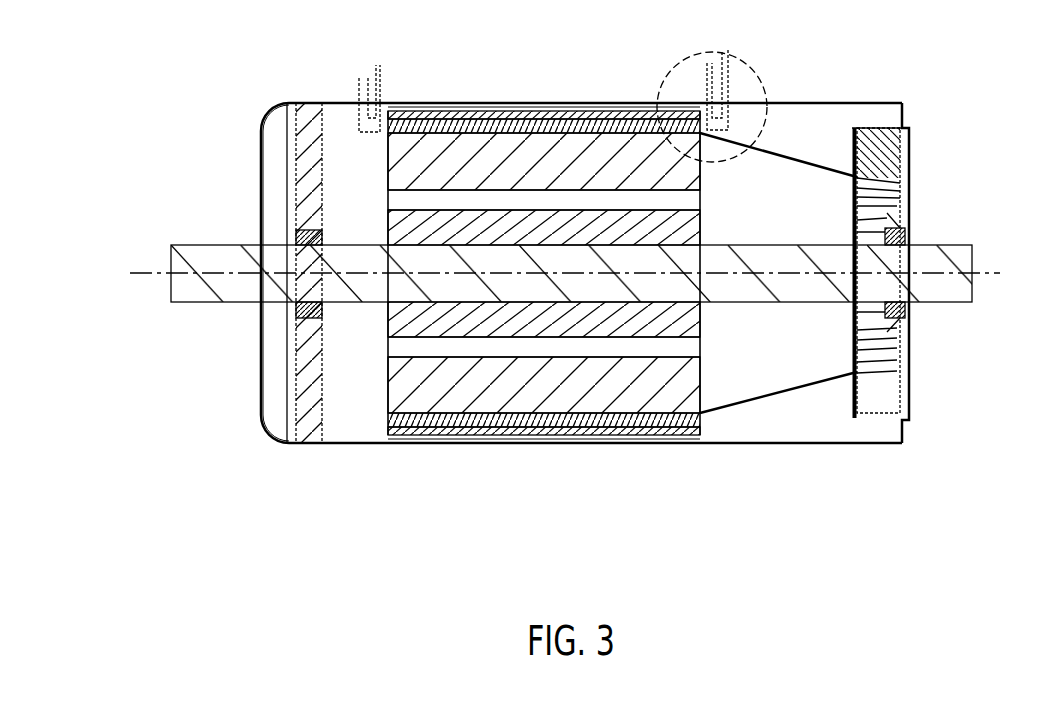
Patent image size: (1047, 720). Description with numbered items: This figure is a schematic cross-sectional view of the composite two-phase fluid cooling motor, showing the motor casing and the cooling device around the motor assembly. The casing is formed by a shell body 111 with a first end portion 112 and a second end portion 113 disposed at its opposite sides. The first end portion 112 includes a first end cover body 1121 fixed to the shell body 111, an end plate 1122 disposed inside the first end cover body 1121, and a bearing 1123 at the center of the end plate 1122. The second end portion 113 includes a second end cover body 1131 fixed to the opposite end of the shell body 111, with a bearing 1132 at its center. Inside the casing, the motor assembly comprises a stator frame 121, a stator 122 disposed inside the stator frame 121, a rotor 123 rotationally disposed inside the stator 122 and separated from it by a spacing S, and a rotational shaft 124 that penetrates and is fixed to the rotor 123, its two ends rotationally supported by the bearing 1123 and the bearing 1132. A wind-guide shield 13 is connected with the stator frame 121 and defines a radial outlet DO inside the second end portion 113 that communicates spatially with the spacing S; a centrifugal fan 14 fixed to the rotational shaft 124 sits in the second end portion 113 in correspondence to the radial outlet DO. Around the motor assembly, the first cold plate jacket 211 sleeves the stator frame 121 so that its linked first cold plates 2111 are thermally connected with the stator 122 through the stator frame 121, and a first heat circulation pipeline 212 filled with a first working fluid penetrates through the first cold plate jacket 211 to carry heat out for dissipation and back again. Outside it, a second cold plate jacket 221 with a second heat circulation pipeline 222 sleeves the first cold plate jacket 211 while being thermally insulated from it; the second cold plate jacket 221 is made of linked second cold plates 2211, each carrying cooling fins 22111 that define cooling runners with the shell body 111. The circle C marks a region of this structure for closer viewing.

The shell body 111 is at (542, 445).
The first end portion 112 is at (263, 312).
The second end portion 113 is at (940, 314).
The first end cover body 1121 is at (260, 377).
The end plate 1122 is at (302, 423).
The bearing 1123 is at (292, 314).
The second end cover body 1131 is at (908, 140).
The bearing 1132 is at (905, 235).
The stator frame 121 is at (543, 241).
The stator 122 is at (388, 144).
The rotor 123 is at (514, 322).
The rotational shaft 124 is at (946, 293).
The wind-guide shield 13 is at (807, 148).
The centrifugal fan 14 is at (867, 127).
The first cold plate jacket 211 is at (690, 160).
The first cold plate 2111 is at (623, 130).
The first heat circulation pipeline 212 is at (708, 50).
The second cold plate jacket 221 is at (442, 104).
The second cold plate 2211 is at (497, 123).
The cooling fin 22111 is at (575, 103).
The second heat circulation pipeline 222 is at (382, 62).
The enlarged region C is at (760, 50).
The spacing S is at (373, 203).
The radial outlet DO is at (890, 115).